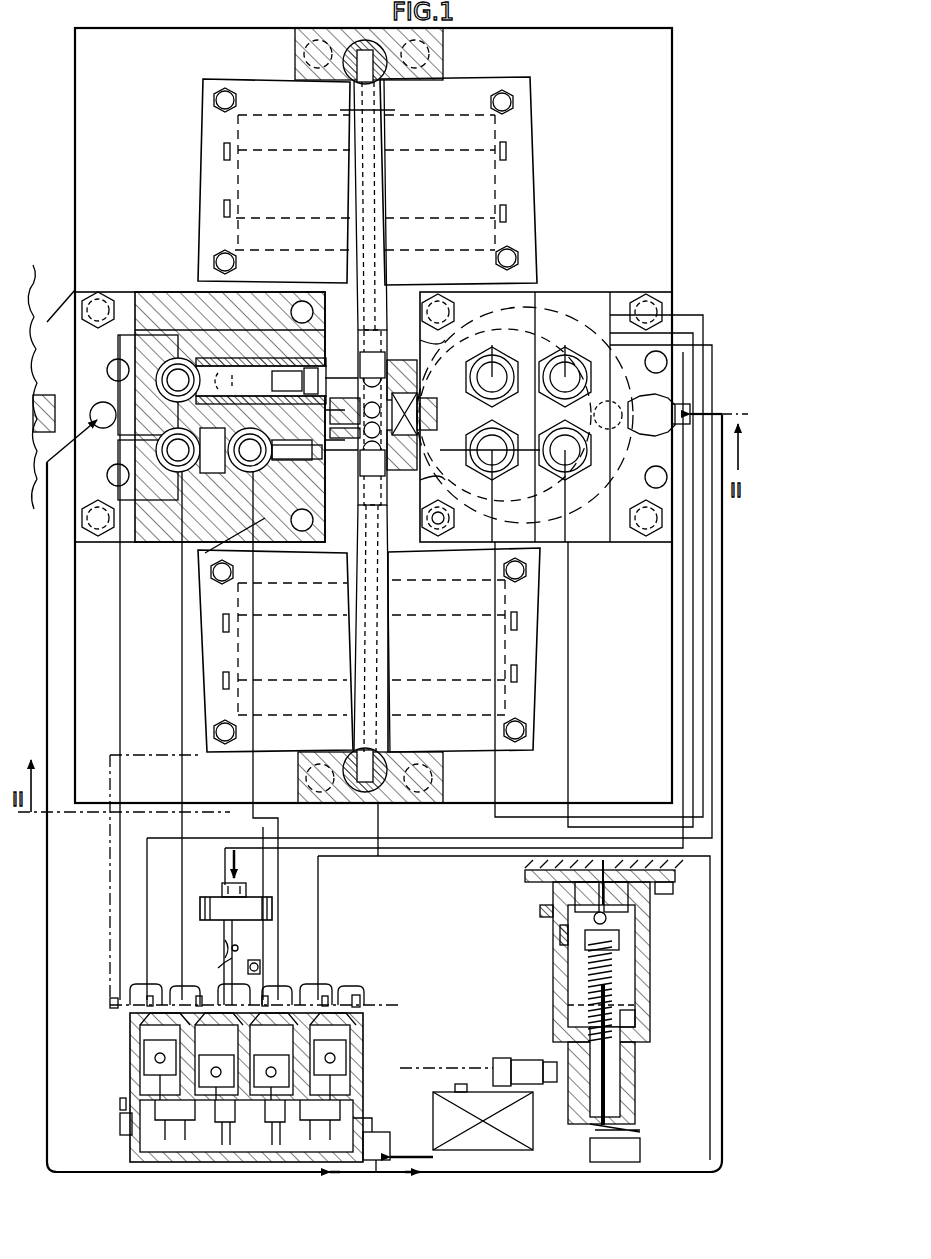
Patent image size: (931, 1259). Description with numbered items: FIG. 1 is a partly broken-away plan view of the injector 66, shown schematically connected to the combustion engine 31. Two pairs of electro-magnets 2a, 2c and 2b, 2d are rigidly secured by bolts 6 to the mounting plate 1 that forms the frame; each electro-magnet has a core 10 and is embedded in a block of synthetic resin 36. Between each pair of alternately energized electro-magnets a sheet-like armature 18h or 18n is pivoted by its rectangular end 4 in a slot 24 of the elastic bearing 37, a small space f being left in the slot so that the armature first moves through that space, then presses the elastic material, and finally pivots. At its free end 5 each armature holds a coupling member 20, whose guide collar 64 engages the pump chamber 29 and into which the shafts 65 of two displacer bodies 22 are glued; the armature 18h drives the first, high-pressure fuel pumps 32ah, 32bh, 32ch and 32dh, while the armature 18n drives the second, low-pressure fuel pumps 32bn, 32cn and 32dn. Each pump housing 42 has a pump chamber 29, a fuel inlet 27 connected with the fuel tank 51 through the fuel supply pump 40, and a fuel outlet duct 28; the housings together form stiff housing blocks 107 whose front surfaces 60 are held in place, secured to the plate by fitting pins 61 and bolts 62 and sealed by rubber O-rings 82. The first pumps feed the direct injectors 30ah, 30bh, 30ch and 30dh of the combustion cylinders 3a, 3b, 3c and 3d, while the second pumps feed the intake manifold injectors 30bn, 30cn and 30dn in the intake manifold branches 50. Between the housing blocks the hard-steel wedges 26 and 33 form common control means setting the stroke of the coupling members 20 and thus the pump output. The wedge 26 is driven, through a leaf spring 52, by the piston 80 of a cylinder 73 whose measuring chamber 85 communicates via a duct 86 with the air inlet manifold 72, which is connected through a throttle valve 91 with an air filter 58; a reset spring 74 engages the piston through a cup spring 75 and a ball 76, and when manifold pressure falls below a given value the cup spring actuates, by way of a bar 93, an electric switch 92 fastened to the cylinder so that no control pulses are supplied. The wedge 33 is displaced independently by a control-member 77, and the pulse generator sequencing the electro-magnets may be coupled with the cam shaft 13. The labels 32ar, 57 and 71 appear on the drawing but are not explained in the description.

The mounting plate 1 is at (72, 228).
The electro-magnet 2a is at (240, 752).
The electro-magnet 2b is at (535, 158).
The electro-magnet 2c is at (500, 752).
The electro-magnet 2d is at (222, 145).
The combustion cylinder 3a is at (232, 1050).
The combustion cylinder 3b is at (288, 1050).
The combustion cylinder 3c is at (146, 1086).
The combustion cylinder 3d is at (340, 1046).
The rectangular end 4 is at (384, 92).
The free end 5 is at (384, 356).
The bolts 6 is at (214, 98).
The core 10 is at (332, 202).
The cam shaft 13 is at (360, 996).
The armature 18h is at (400, 338).
The armature 18n is at (366, 312).
The coupling member 20 is at (318, 381).
The displacer body 22 is at (270, 378).
The slot 24 is at (350, 81).
The wedge 26 is at (430, 416).
The fuel inlet 27 is at (688, 405).
The fuel outlet duct 28 is at (560, 390).
The pump chamber 29 is at (260, 332).
The injector 30ah is at (243, 985).
The injector 30bh is at (280, 988).
The intake manifold injector 30bn is at (270, 955).
The injector 30ch is at (184, 990).
The intake manifold injector 30cn is at (145, 997).
The injector 30dh is at (340, 1000).
The intake manifold injector 30dn is at (336, 986).
The combustion engine 31 is at (127, 1050).
The first fuel pump 32ah is at (202, 543).
The control valve block 32ar is at (182, 492).
The first fuel pump 32bh is at (493, 342).
The second fuel pump 32bn is at (567, 342).
The first fuel pump 32ch is at (510, 488).
The second fuel pump 32cn is at (578, 488).
The first fuel pump 32dh is at (200, 401).
The second fuel pump 32dn is at (114, 294).
The wedge 33 is at (282, 542).
The block of synthetic resin 36 is at (200, 663).
The bearing 37 is at (370, 24).
The fuel supply pump 40 is at (388, 1148).
The pump housing 42 is at (272, 296).
The intake manifold branch 50 is at (155, 990).
The fuel tank 51 is at (483, 1117).
The leaf spring 52 is at (621, 886).
The seal 57 is at (556, 916).
The air filter 58 is at (208, 896).
The front surfaces 60 is at (345, 300).
The fitting pins 61 is at (110, 371).
The bolts 62 is at (90, 313).
The guide collar 64 is at (290, 352).
The shaft 65 is at (354, 387).
The injector 66 is at (674, 214).
The seal 71 is at (678, 892).
The air inlet manifold 72 is at (222, 964).
The cylinder 73 is at (650, 985).
The reset spring 74 is at (620, 975).
The cup spring 75 is at (593, 953).
The ball 76 is at (590, 903).
The control-member 77 is at (548, 980).
The piston 80 is at (565, 950).
The rubber O-rings 82 is at (455, 520).
The measuring chamber 85 is at (632, 1018).
The duct 86 is at (503, 1058).
The throttle valve 91 is at (239, 938).
The electric switch 92 is at (615, 1143).
The bar 93 is at (620, 1000).
The housing block 107 is at (550, 288).
The space f is at (360, 112).